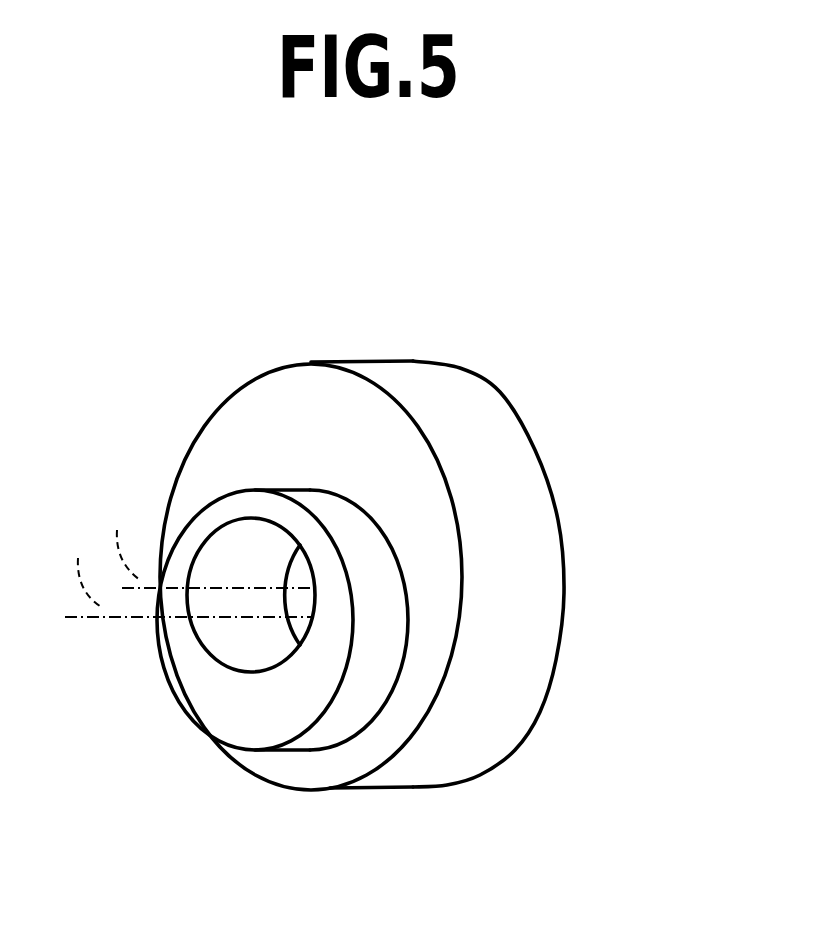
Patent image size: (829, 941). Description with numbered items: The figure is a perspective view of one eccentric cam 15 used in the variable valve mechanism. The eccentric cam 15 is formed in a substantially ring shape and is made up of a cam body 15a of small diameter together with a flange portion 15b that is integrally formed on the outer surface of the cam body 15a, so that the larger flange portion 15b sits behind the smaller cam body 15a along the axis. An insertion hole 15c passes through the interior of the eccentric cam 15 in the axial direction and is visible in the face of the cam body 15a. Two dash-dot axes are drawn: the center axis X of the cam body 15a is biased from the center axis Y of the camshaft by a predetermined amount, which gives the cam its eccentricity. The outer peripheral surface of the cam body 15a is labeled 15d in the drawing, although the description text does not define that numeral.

The eccentric cam 15 is at (376, 572).
The cam body 15a is at (243, 730).
The flange portion 15b is at (537, 554).
The insertion hole 15c is at (236, 646).
The boss outer peripheral surface 15d is at (343, 715).